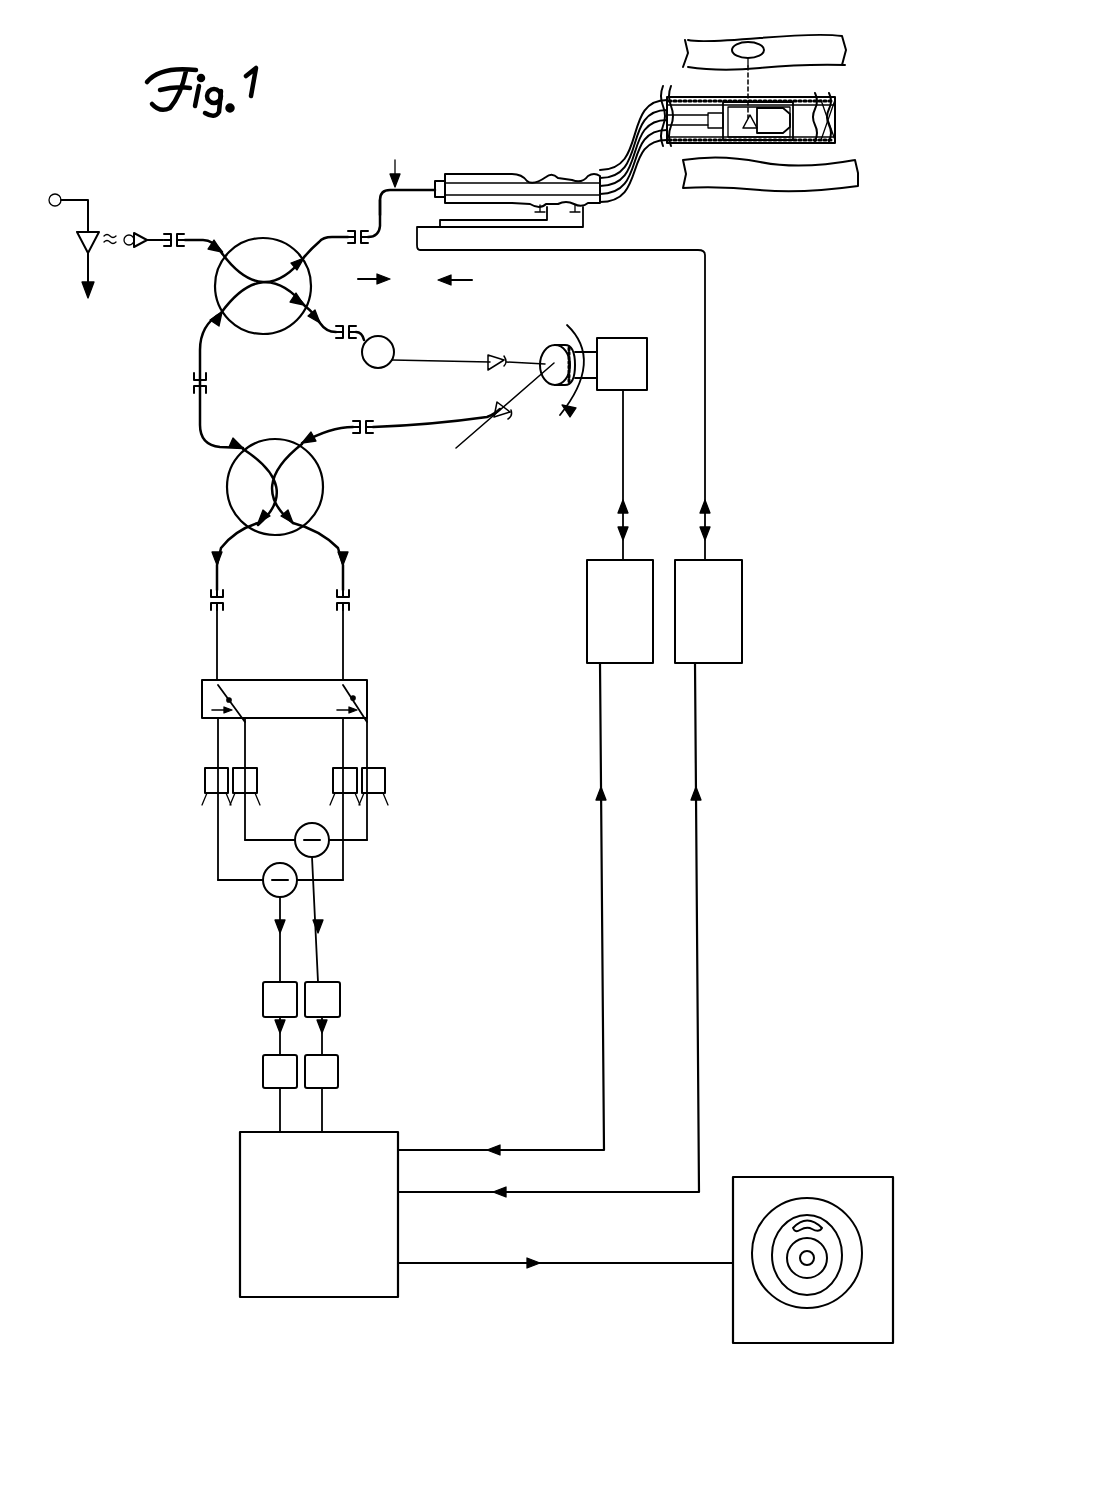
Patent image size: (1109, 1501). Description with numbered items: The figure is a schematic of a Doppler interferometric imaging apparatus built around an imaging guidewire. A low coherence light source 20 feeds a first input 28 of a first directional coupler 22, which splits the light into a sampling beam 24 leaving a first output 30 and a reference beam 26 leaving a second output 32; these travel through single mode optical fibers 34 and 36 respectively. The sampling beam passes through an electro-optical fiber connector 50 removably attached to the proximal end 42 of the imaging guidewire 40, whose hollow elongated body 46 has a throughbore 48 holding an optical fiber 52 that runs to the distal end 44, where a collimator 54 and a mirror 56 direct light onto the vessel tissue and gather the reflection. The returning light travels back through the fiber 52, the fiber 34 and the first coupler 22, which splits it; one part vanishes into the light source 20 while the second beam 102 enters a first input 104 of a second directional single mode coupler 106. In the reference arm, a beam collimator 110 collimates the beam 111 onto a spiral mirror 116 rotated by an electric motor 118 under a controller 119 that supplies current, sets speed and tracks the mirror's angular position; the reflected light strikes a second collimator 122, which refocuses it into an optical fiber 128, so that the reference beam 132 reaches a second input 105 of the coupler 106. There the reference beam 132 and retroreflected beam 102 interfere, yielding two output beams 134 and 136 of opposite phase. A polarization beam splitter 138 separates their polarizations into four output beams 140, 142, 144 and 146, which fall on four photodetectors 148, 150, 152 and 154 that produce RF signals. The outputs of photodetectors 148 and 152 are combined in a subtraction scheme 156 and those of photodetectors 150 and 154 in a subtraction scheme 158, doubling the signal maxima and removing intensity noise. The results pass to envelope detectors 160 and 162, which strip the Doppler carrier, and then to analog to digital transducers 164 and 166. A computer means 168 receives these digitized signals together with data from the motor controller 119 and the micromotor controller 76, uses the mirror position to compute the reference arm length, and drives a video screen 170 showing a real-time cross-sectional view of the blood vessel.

The low coherence light source 20 is at (92, 212).
The first directional coupler 22 is at (258, 236).
The sampling beam 24 is at (388, 197).
The reference beam 26 is at (392, 286).
The first input 28 is at (205, 238).
The first output 30 is at (306, 250).
The second output 32 is at (312, 307).
The optical fiber 34 is at (340, 153).
The optical fiber 36 is at (400, 368).
The imaging guidewire 40 is at (538, 140).
The proximal end 42 is at (435, 178).
The distal end 44 is at (837, 117).
The hollow elongated body 46 is at (527, 178).
The throughbore 48 is at (543, 170).
The electro-optical fiber connector 50 is at (478, 176).
The optical fiber 52 is at (597, 183).
The collimator 54 is at (697, 98).
The mirror 56 is at (752, 130).
The micromotor controller 76 is at (742, 602).
The second beam 102 is at (170, 410).
The first input 104 is at (240, 449).
The second input 105 is at (305, 445).
The second directional single mode coupler 106 is at (316, 488).
The beam collimator 110 is at (501, 354).
The collimated reference beam 111 is at (522, 357).
The spiral mirror 116 is at (579, 384).
The electric motor 118 is at (617, 338).
The controller 119 is at (588, 603).
The second collimator 122 is at (505, 419).
The optical fiber 128 is at (492, 420).
The reference beam 132 is at (302, 423).
The output beam 134 is at (231, 542).
The output beam 136 is at (333, 542).
The polarization beam splitter 138 is at (368, 692).
The output beam 140 is at (217, 741).
The output beam 142 is at (246, 741).
The output beam 144 is at (346, 727).
The output beam 146 is at (368, 752).
The photodetector 148 is at (205, 781).
The photodetector 150 is at (257, 781).
The photodetector 152 is at (355, 782).
The photodetector 154 is at (379, 789).
The subtraction scheme 156 is at (300, 884).
The subtraction scheme 158 is at (334, 842).
The envelope detector 160 is at (333, 983).
The envelope detector 162 is at (263, 984).
The analog to digital transducer 164 is at (330, 1056).
The analog to digital transducer 166 is at (263, 1058).
The computer means 168 is at (338, 1132).
The video screen 170 is at (752, 1177).